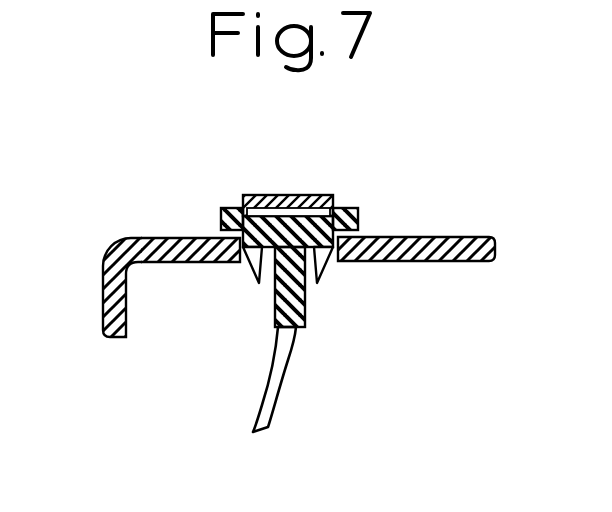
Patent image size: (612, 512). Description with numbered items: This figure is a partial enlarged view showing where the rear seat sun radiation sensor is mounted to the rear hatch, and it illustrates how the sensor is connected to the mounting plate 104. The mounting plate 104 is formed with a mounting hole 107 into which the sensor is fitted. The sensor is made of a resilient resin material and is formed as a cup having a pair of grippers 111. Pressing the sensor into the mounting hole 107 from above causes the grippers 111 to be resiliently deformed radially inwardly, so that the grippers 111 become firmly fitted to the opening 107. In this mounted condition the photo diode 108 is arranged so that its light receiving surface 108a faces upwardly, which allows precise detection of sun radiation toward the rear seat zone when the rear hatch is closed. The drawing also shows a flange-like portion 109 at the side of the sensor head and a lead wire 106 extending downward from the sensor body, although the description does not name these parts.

The mounting plate 104 is at (103, 270).
The mounting hole 107 is at (232, 264).
The photo diode 108 is at (290, 233).
The light receiving surface 108a is at (295, 197).
The flange 109 is at (216, 220).
The grippers 111 is at (258, 281).
The lead wire 106 is at (290, 362).